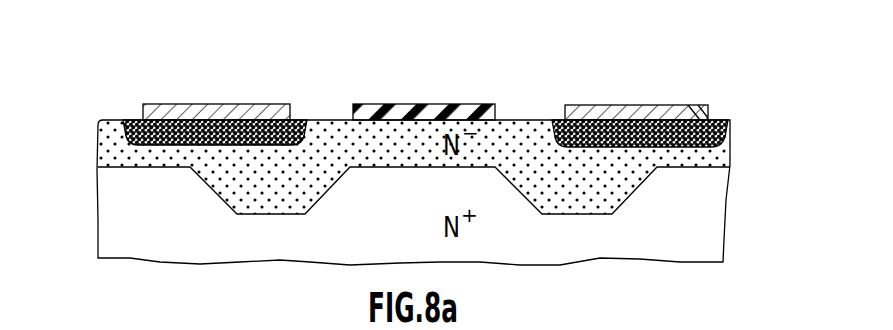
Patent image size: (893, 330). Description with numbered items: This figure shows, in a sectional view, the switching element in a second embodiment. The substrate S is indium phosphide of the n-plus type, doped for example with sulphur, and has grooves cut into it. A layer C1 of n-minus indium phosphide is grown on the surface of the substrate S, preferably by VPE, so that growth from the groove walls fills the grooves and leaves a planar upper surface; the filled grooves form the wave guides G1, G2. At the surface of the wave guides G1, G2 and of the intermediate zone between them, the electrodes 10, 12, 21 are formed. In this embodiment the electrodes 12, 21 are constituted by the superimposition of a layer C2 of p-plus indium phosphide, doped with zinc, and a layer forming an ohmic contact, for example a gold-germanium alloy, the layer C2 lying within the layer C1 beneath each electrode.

The layer C1 is at (703, 157).
The layer C2 is at (735, 68).
The substrate S is at (698, 235).
The electrode 12 is at (228, 96).
The electrode 10 is at (427, 96).
The electrode 21 is at (656, 97).
The guide G1 is at (293, 175).
The guide G2 is at (563, 178).